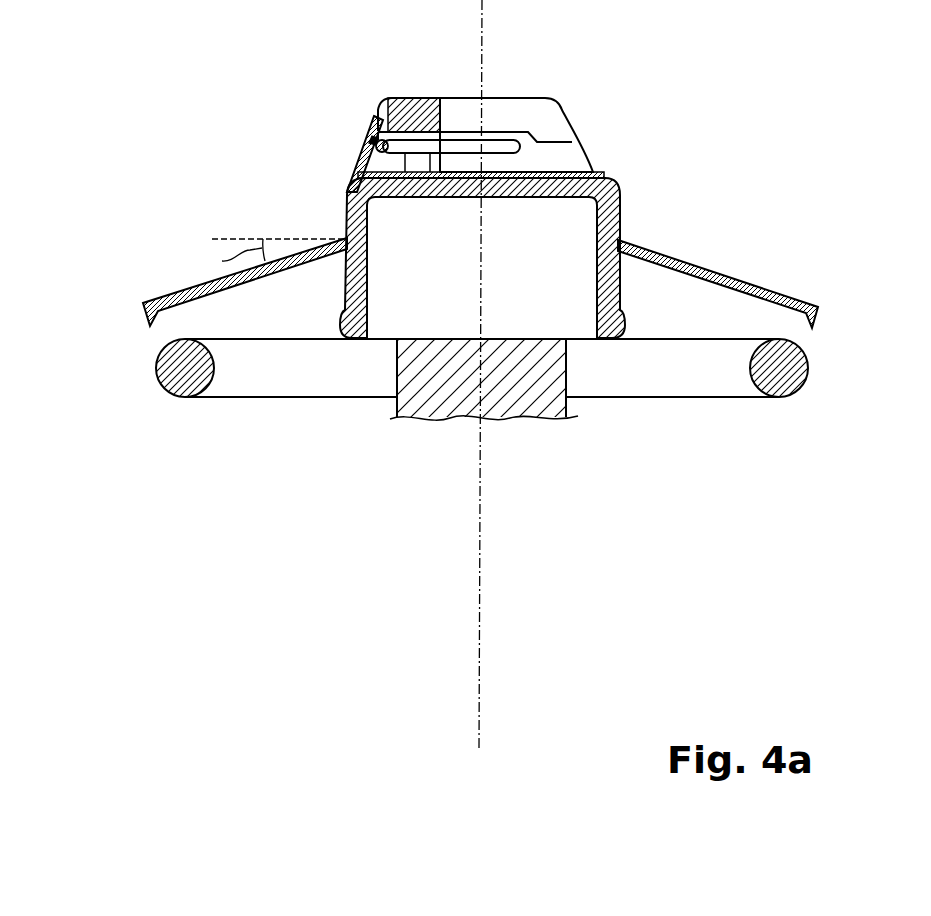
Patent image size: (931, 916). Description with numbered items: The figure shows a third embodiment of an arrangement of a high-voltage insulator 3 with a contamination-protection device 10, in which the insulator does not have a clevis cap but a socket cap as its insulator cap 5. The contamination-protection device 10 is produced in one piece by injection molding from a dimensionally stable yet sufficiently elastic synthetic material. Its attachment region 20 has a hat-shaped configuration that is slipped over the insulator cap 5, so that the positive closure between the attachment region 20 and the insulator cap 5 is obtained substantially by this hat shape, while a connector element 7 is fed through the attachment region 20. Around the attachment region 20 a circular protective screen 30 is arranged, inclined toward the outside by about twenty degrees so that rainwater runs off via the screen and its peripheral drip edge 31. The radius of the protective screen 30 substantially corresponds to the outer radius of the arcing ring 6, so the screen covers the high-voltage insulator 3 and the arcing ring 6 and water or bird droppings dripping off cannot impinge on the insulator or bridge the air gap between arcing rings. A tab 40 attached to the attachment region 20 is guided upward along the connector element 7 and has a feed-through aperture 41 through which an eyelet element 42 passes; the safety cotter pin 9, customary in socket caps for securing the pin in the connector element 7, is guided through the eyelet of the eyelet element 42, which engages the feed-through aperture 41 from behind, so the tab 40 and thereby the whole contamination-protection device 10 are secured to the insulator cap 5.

The high-voltage insulator 3 is at (417, 410).
The insulator cap 5 is at (428, 98).
The arcing ring 6 is at (172, 398).
The connector element 7 is at (553, 130).
The safety cotter pin 9 is at (457, 148).
The contamination-protection device 10 is at (170, 268).
The attachment region 20 is at (603, 173).
The protective screen 30 is at (715, 268).
The drip edge 31 is at (142, 318).
The tab 40 is at (370, 156).
The feed-through aperture 41 is at (372, 140).
The eyelet element 42 is at (372, 146).